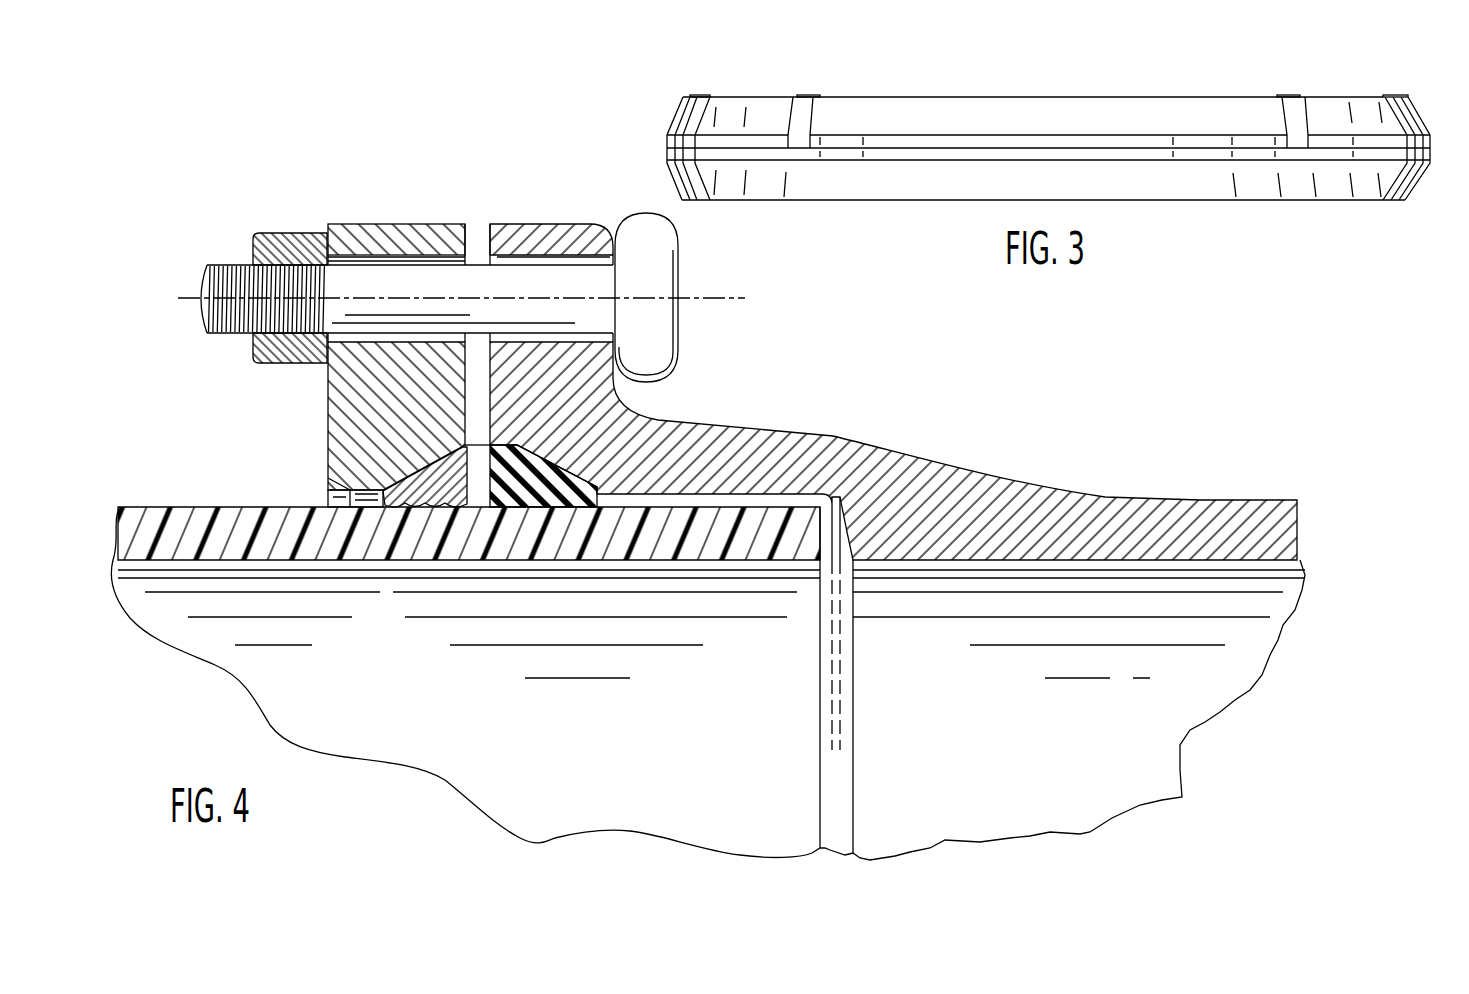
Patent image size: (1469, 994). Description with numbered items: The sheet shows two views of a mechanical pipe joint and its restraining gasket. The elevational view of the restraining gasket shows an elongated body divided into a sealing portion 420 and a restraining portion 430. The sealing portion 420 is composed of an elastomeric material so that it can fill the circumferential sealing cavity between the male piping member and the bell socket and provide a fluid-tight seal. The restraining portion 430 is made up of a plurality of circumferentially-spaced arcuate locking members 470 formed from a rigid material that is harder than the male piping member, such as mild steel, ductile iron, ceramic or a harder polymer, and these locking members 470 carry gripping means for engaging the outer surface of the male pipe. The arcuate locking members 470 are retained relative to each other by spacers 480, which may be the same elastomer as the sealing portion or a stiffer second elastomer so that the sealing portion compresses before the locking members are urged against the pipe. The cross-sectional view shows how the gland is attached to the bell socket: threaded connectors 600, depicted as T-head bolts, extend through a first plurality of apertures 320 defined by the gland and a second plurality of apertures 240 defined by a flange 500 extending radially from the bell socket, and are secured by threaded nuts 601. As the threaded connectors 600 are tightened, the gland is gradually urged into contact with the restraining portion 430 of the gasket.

In FIG. 4, the second plurality of apertures 240 is at (580, 333).
In FIG. 4, the first plurality of apertures 320 is at (352, 351).
In FIG. 3, the sealing portion 420 is at (673, 183).
In FIG. 3, the restraining portion 430 is at (662, 107).
In FIG. 3, the arcuate locking members 470 is at (742, 95).
In FIG. 3, the spacers 480 is at (697, 94).
In FIG. 4, the flange 500 is at (512, 220).
In FIG. 4, the threaded connectors 600 is at (700, 249).
In FIG. 4, the threaded nuts 601 is at (283, 227).